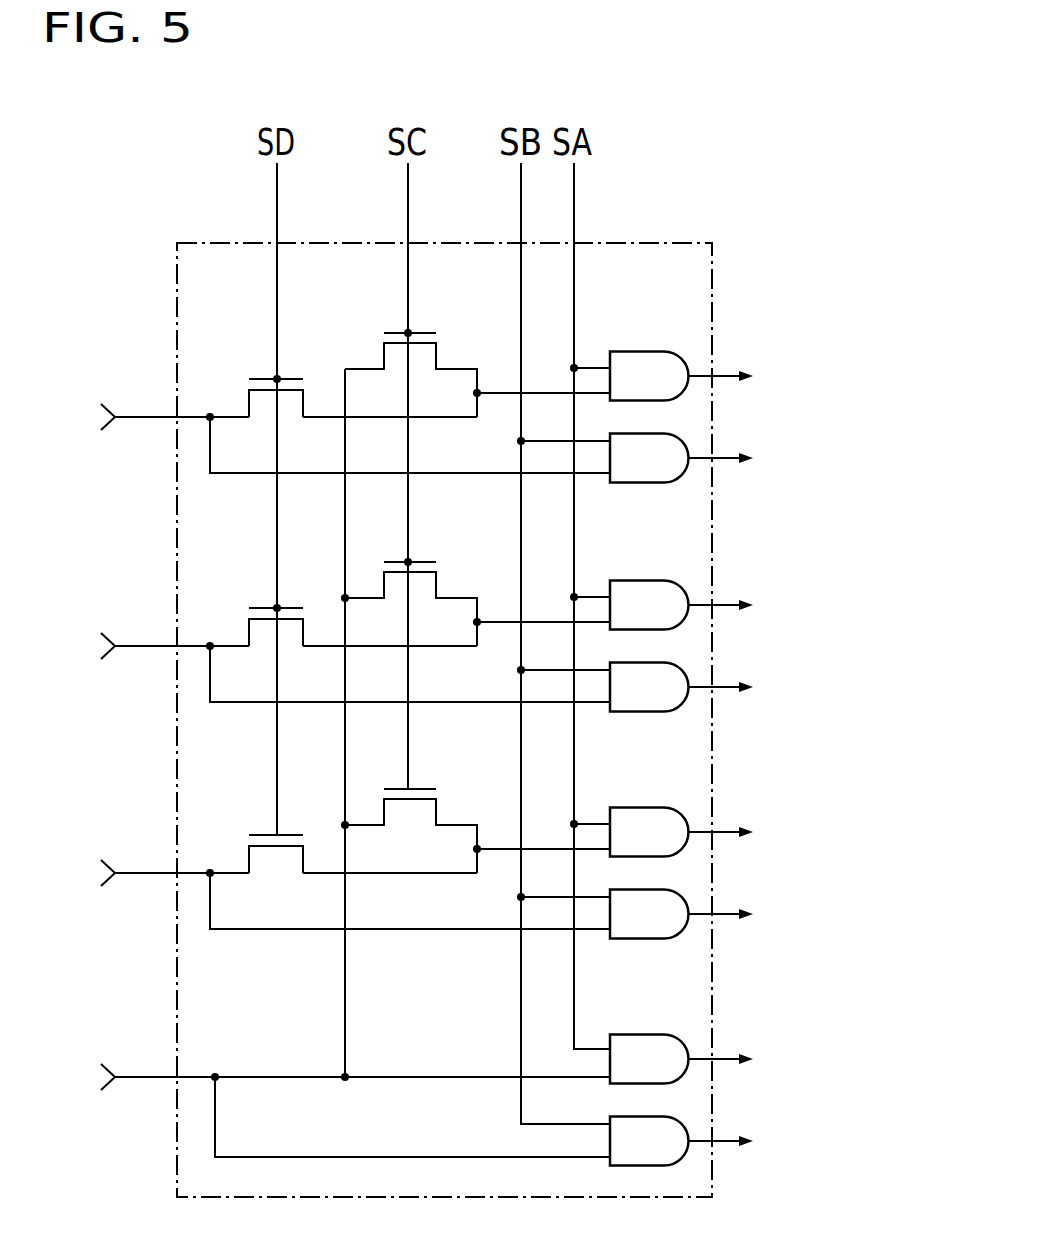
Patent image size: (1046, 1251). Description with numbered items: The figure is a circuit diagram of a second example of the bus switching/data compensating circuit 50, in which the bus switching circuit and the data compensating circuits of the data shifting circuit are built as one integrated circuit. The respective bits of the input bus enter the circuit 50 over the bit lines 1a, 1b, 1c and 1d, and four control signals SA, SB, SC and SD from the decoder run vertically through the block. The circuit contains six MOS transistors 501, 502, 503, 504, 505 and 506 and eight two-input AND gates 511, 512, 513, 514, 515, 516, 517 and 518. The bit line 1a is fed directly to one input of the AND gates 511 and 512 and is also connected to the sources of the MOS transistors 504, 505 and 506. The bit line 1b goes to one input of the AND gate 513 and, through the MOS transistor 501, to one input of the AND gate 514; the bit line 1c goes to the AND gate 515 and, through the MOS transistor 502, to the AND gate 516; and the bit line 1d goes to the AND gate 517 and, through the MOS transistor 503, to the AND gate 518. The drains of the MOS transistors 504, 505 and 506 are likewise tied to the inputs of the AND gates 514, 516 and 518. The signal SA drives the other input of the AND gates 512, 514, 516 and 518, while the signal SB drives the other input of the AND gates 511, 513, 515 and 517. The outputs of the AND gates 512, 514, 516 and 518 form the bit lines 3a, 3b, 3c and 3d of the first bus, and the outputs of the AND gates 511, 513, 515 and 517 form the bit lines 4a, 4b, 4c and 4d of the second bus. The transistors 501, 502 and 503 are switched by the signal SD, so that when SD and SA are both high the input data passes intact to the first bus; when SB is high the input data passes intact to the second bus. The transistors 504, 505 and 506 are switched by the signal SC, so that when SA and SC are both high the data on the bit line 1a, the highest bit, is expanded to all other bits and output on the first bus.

The bus switching/data compensating circuit 50 is at (672, 240).
The MOS transistor 501 is at (265, 831).
The MOS transistor 502 is at (265, 604).
The MOS transistor 503 is at (265, 375).
The MOS transistor 504 is at (425, 785).
The MOS transistor 505 is at (425, 558).
The MOS transistor 506 is at (425, 329).
The 2-input AND gate 511 is at (649, 1141).
The 2-input AND gate 512 is at (649, 1059).
The 2-input AND gate 513 is at (602, 914).
The 2-input AND gate 514 is at (629, 832).
The 2-input AND gate 515 is at (602, 687).
The 2-input AND gate 516 is at (629, 605).
The 2-input AND gate 517 is at (602, 458).
The 2-input AND gate 518 is at (629, 376).
The bit line 1a is at (142, 1077).
The bit line 1b is at (142, 873).
The bit line 1c is at (142, 646).
The bit line 1d is at (142, 417).
The bit line of the first bus 3a is at (722, 1058).
The bit line of the first bus 3b is at (722, 831).
The bit line of the first bus 3c is at (722, 604).
The bit line of the first bus 3d is at (722, 375).
The bit line of the second bus 4a is at (722, 1140).
The bit line of the second bus 4b is at (722, 913).
The bit line of the second bus 4c is at (722, 686).
The bit line of the second bus 4d is at (722, 457).